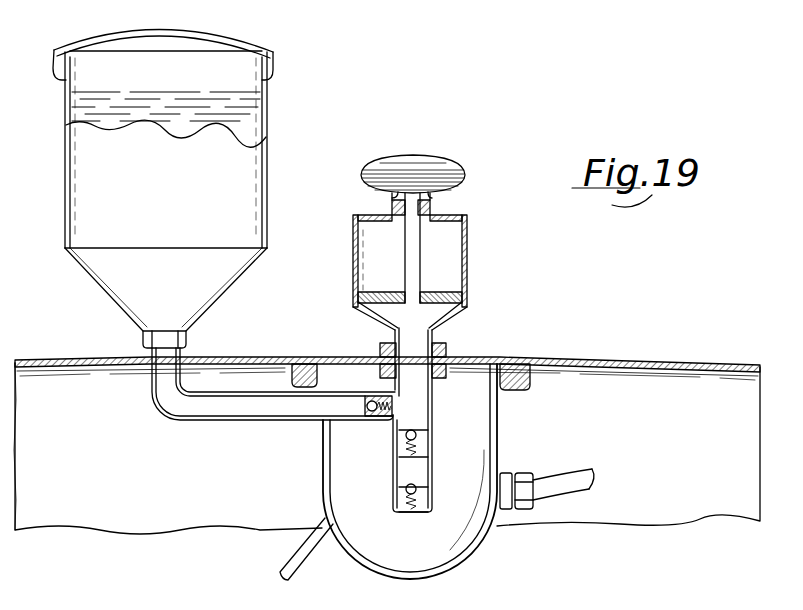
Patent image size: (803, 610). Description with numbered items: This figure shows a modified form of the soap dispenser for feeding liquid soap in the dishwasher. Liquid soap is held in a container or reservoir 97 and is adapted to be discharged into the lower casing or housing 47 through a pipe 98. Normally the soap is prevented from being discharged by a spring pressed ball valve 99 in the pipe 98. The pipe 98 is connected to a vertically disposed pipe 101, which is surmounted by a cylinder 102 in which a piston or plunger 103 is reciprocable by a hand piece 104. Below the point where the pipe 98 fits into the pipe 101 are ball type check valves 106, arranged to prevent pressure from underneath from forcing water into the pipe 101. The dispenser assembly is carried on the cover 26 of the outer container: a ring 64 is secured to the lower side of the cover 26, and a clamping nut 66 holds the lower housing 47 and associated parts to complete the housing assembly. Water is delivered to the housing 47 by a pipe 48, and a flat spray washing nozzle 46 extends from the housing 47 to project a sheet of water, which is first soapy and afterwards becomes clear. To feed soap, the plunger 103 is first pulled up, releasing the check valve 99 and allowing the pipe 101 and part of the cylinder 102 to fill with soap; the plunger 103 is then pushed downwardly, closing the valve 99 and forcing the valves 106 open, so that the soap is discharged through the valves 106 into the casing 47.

The reservoir 97 is at (262, 168).
The cover 26 is at (262, 356).
The pipe 98 is at (241, 412).
The clamping nut 66 is at (292, 373).
The ring 64 is at (530, 368).
The cylinder 102 is at (468, 258).
The plunger 103 is at (468, 297).
The hand piece 104 is at (455, 168).
The vertically disposed pipe 101 is at (430, 391).
The spring pressed ball valve 99 is at (376, 413).
The ball type check valves 106 is at (416, 434).
The lower housing 47 is at (478, 548).
The pipe 48 is at (585, 482).
The flat spray washing nozzle 46 is at (303, 552).